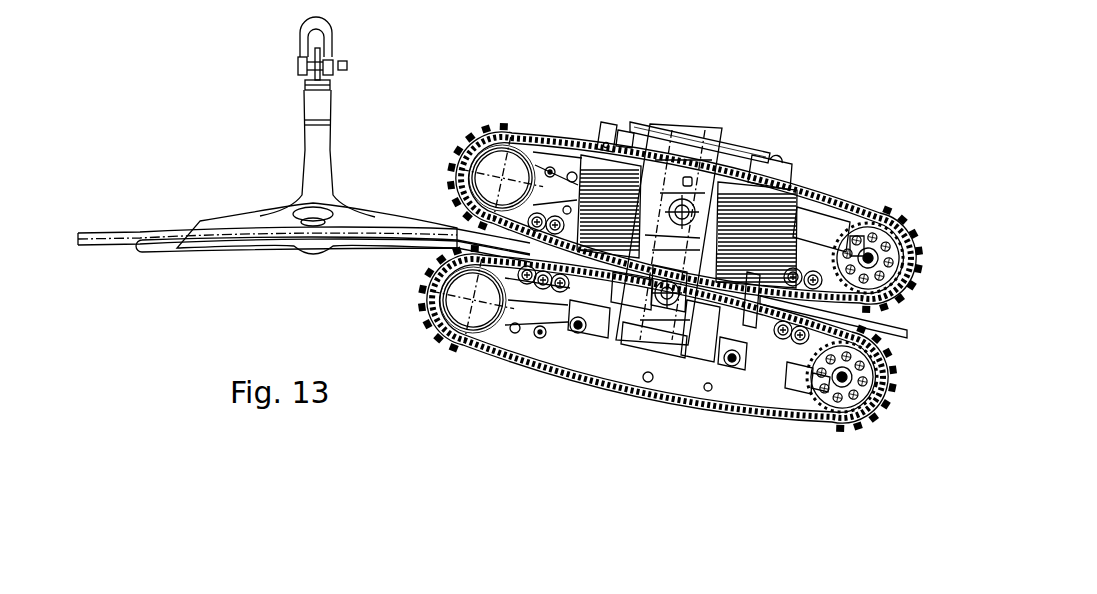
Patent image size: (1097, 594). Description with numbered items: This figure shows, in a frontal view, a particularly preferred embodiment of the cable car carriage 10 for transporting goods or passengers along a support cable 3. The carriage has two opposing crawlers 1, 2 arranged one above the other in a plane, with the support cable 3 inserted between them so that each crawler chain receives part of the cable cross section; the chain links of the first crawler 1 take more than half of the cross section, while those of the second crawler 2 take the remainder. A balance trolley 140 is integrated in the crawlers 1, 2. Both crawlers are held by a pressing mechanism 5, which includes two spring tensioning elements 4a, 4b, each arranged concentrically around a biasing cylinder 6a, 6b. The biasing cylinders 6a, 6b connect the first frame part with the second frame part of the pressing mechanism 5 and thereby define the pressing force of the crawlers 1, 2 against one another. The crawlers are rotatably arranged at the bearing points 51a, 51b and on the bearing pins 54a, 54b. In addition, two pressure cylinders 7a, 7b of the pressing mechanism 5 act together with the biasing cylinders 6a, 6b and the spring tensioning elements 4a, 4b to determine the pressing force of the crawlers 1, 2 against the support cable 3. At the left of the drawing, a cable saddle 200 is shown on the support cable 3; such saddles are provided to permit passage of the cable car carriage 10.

The first crawler 1 is at (680, 202).
The second crawler 2 is at (651, 385).
The support cable 3 is at (112, 230).
The spring tensioning element 4a is at (497, 133).
The spring tensioning element 4b is at (805, 182).
The pressing mechanism 5 is at (672, 120).
The biasing cylinder 6a is at (592, 375).
The biasing cylinder 6b is at (853, 427).
The pressure cylinder 7a is at (618, 127).
The pressure cylinder 7b is at (763, 420).
The cable car carriage 10 is at (664, 277).
The bearing point 51a is at (690, 210).
The bearing pin 54a is at (683, 210).
The bearing point 51b is at (682, 340).
The bearing pin 54b is at (660, 355).
The balance trolley 140 is at (528, 303).
The cable saddle 200 is at (313, 167).